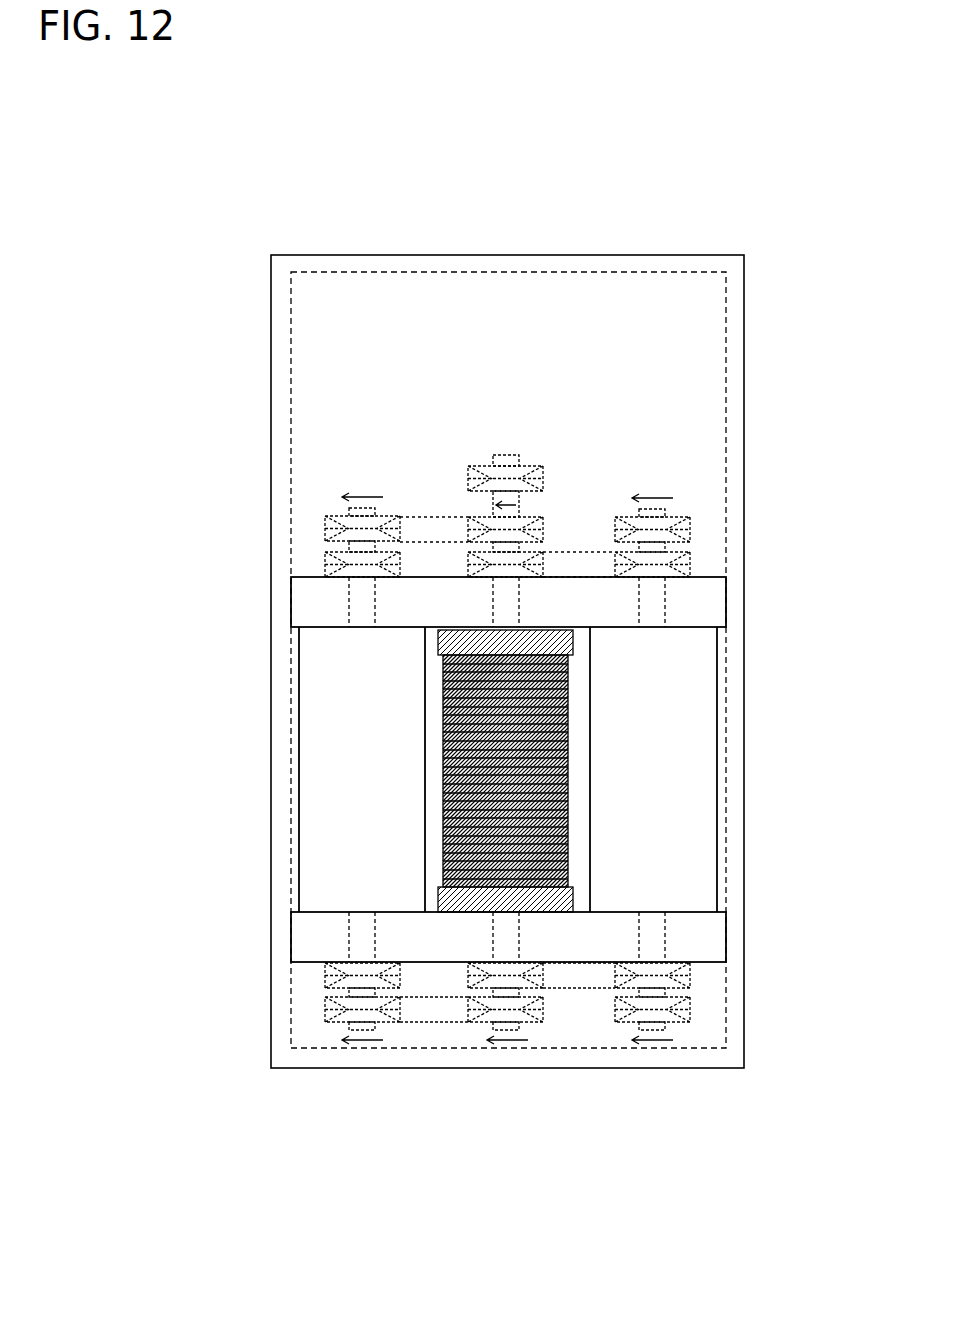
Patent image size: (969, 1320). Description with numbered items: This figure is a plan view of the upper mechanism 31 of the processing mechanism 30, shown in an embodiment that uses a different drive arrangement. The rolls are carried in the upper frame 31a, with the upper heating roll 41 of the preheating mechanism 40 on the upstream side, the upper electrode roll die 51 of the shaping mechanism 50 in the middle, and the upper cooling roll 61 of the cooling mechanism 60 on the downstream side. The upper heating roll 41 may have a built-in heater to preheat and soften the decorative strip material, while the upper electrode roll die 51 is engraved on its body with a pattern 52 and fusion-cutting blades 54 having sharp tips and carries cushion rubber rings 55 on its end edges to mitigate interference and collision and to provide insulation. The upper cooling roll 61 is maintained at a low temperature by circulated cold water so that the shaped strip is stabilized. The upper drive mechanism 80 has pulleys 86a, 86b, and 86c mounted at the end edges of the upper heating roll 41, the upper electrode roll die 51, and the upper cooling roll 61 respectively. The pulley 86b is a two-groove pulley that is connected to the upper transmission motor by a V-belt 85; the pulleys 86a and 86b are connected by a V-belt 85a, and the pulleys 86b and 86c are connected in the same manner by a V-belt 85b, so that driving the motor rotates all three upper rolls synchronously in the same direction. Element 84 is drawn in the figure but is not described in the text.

The processing mechanism 30 is at (539, 596).
The upper mechanism 31 is at (728, 240).
The upper frame 31a is at (733, 435).
The preheating mechanism 40 is at (522, 837).
The upper heating roll 41 is at (522, 837).
The shaping mechanism 50 is at (415, 913).
The upper electrode roll die 51 is at (415, 913).
The pattern 52 is at (383, 771).
The fusion-cutting blades 54 is at (447, 824).
The cushion rubber rings 55 is at (552, 905).
The cooling mechanism 60 is at (457, 991).
The upper cooling roll 61 is at (317, 885).
The upper drive mechanism 80 is at (501, 502).
The drive shaft hub 84 is at (507, 472).
The V-belt 85 is at (548, 477).
The V-belt 85a is at (603, 562).
The V-belt 85b is at (427, 533).
The pulley 86a is at (667, 565).
The pulley 86b is at (487, 528).
The pulley 86c is at (323, 532).